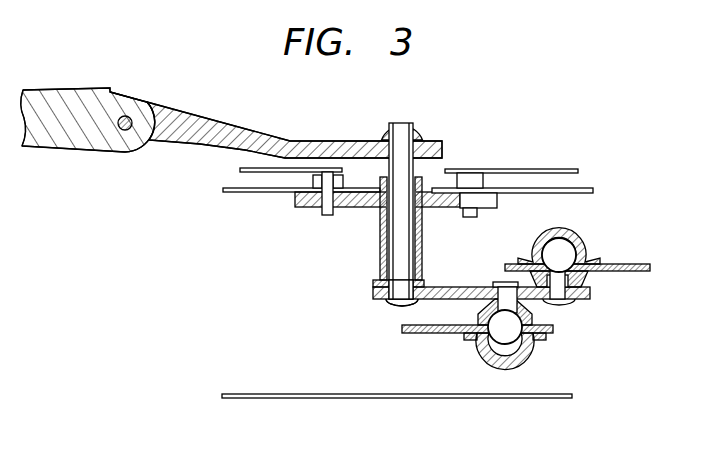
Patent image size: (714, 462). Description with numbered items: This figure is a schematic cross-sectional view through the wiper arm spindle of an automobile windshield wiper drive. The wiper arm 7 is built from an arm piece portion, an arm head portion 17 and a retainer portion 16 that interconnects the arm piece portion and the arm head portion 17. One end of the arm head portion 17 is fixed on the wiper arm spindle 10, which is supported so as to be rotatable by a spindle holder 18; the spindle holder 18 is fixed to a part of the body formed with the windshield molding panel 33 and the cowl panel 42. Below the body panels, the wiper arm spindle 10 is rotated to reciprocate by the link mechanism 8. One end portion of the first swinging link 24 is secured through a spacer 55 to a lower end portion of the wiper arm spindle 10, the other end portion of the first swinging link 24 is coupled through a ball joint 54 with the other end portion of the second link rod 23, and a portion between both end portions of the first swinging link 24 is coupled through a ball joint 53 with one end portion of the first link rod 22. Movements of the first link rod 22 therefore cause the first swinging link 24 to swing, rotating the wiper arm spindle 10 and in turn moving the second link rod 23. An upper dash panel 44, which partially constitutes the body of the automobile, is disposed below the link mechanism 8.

The wiper arm 7 is at (231, 141).
The link mechanism 8 is at (491, 301).
The wiper arm spindle 10 is at (422, 122).
The retainer portion 16 is at (81, 88).
The arm head portion 17 is at (239, 123).
The spindle holder 18 is at (353, 208).
The first link rod 22 is at (430, 334).
The second link rod 23 is at (620, 272).
The first swinging link 24 is at (448, 286).
The windshield molding panel 33 is at (507, 170).
The cowl panel 42 is at (258, 193).
The upper dash panel 44 is at (510, 398).
The ball joint 53 is at (593, 328).
The ball joint 54 is at (579, 246).
The spacer 55 is at (372, 284).